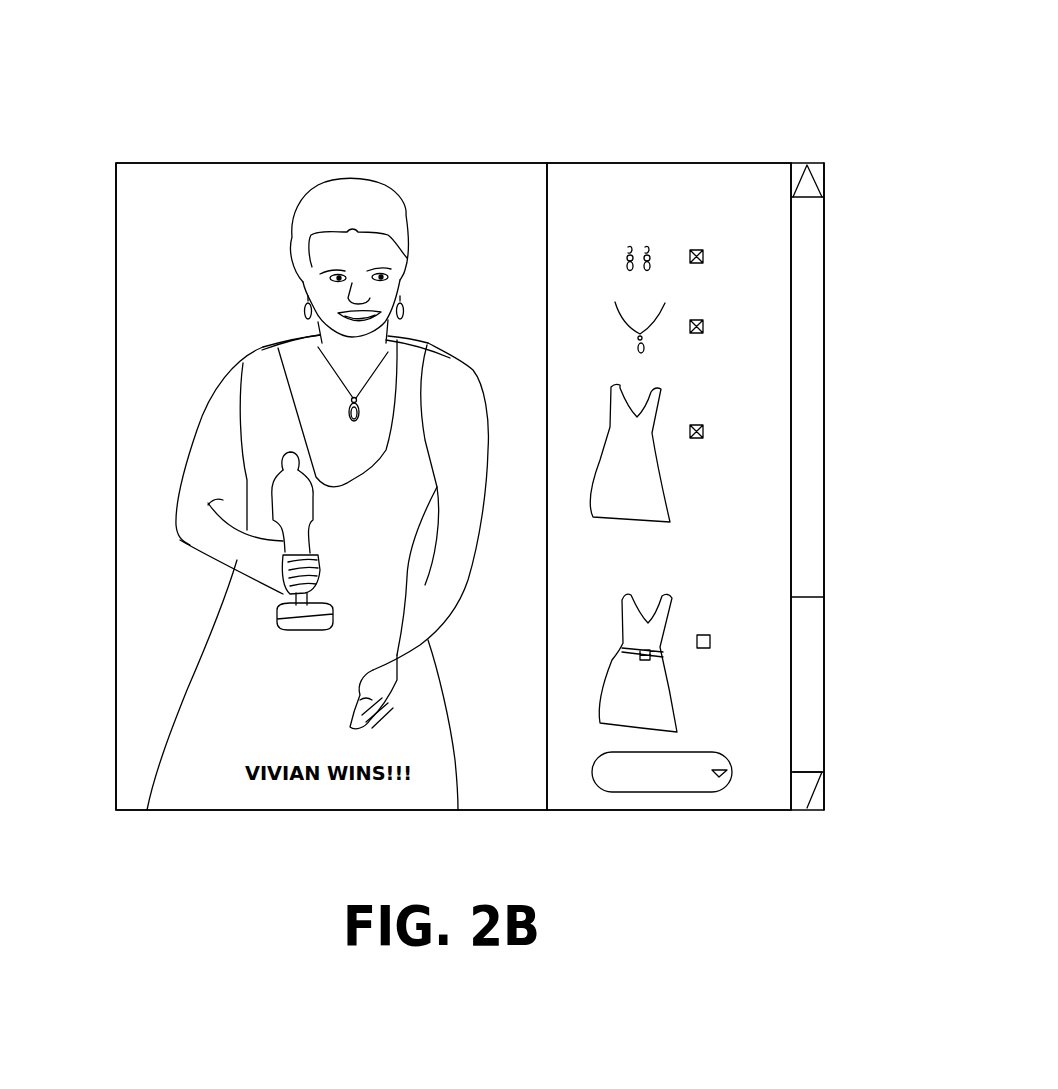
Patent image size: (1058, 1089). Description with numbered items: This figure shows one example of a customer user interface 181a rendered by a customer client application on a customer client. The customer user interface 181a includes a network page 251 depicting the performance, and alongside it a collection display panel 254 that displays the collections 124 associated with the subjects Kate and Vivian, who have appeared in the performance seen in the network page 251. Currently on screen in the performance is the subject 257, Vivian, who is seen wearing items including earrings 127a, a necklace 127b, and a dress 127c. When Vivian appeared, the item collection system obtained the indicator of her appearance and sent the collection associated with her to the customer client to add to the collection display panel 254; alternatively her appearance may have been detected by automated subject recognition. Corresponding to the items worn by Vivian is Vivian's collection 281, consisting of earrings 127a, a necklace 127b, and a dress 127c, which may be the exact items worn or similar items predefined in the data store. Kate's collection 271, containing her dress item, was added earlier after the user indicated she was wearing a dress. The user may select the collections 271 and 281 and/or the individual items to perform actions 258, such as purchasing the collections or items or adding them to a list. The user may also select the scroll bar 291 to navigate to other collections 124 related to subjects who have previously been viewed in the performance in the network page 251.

The customer user interface 181a is at (808, 76).
The network page 251 is at (146, 207).
The collection display panel 254 is at (755, 180).
The subject 257 is at (418, 252).
The earrings 127a is at (608, 258).
The necklace 127b is at (603, 310).
The dress 127c is at (603, 418).
The Vivian's collection 281 is at (764, 214).
The collections 124 is at (735, 372).
The Kate's collection 271 is at (770, 562).
The scroll bar 291 is at (835, 753).
The actions 258 is at (669, 795).